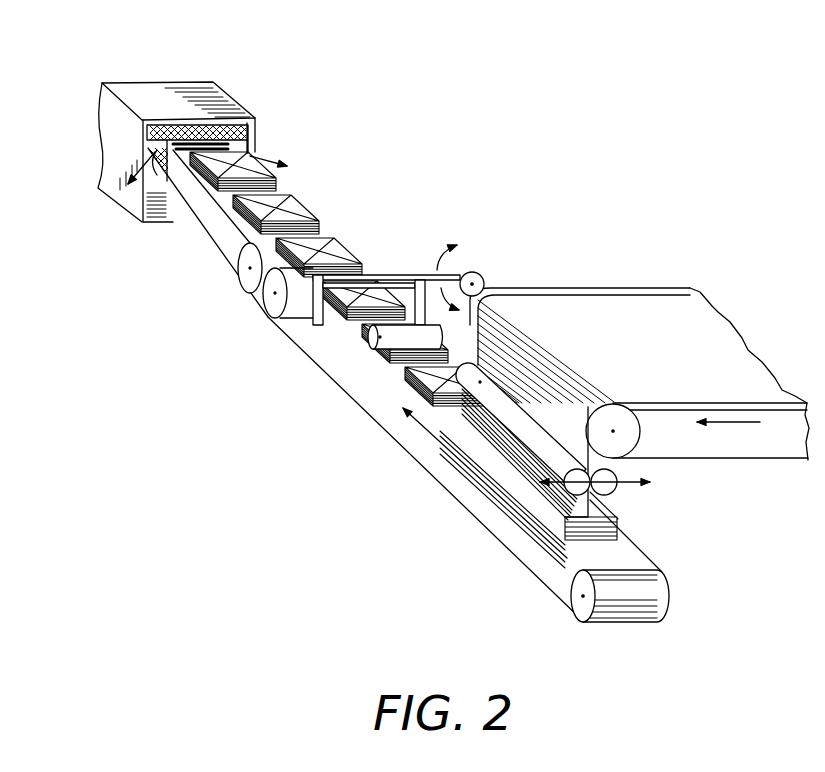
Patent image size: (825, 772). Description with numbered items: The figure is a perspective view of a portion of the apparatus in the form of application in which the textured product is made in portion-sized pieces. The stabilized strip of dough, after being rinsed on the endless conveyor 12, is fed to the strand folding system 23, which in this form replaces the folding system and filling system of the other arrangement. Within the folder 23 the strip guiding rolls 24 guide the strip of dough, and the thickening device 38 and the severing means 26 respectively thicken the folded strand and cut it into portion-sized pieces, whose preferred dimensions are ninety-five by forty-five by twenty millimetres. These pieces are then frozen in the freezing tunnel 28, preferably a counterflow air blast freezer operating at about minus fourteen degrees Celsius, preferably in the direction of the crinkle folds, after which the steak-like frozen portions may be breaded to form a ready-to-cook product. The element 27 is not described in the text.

The endless conveyor 12 is at (712, 343).
The strand folding system 23 is at (533, 555).
The strip guiding rolls 24 is at (550, 443).
The severing means 26 is at (464, 260).
The feed conveyor 27 is at (222, 245).
The freezing tunnel 28 is at (121, 196).
The thickening device 38 is at (373, 347).